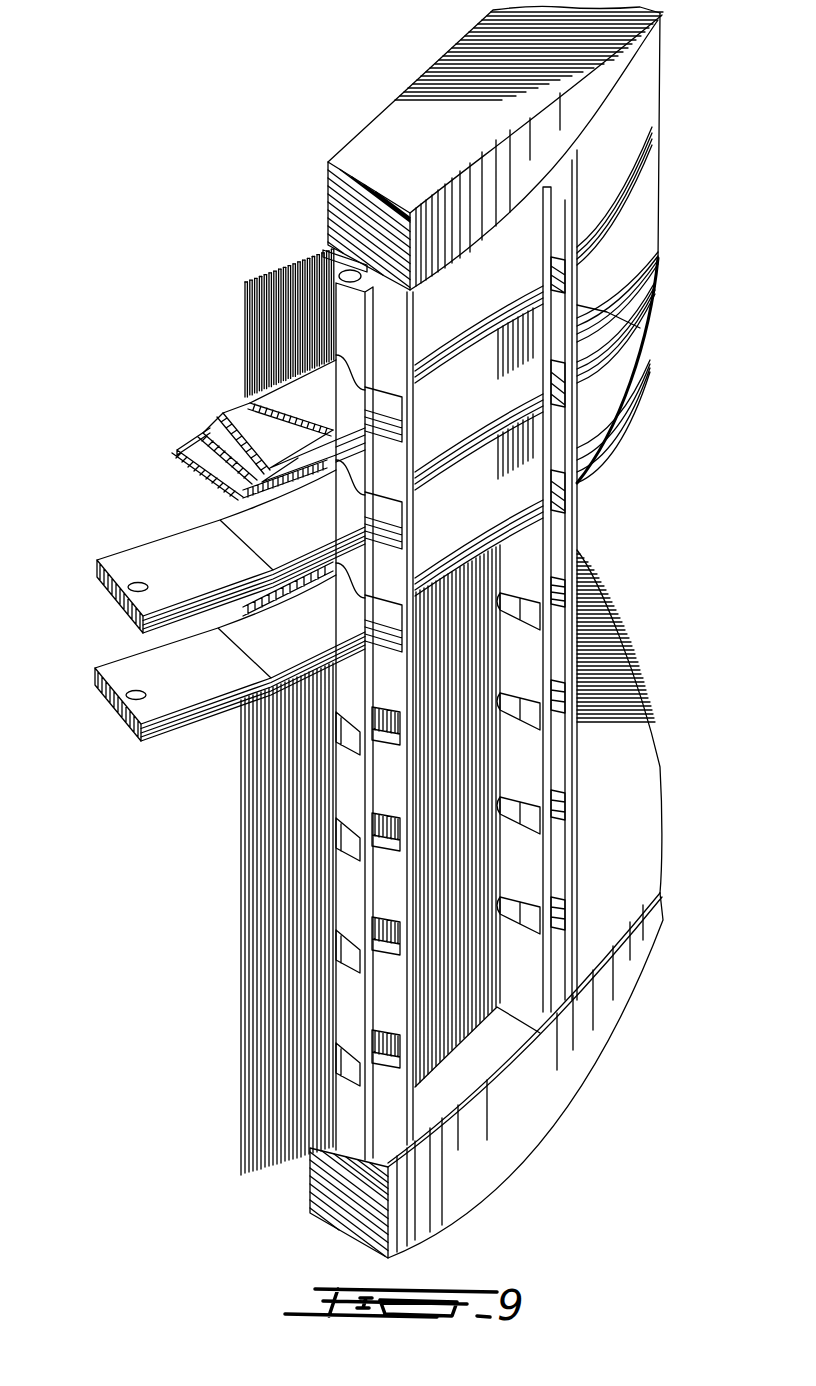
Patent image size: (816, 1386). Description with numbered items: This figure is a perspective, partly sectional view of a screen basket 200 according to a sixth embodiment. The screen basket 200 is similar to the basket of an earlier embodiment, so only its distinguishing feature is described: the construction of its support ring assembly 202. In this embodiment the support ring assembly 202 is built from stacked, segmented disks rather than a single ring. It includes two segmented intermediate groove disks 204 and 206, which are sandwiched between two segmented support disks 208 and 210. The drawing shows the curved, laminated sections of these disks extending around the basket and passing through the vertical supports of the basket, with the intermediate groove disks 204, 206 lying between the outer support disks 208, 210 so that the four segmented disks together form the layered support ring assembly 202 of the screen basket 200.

The screen basket 200 is at (145, 165).
The support ring assembly 202 is at (141, 560).
The segmented intermediate groove disk 204 is at (240, 418).
The segmented intermediate groove disk 206 is at (219, 426).
The segmented support disk 208 is at (310, 393).
The segmented support disk 210 is at (208, 453).